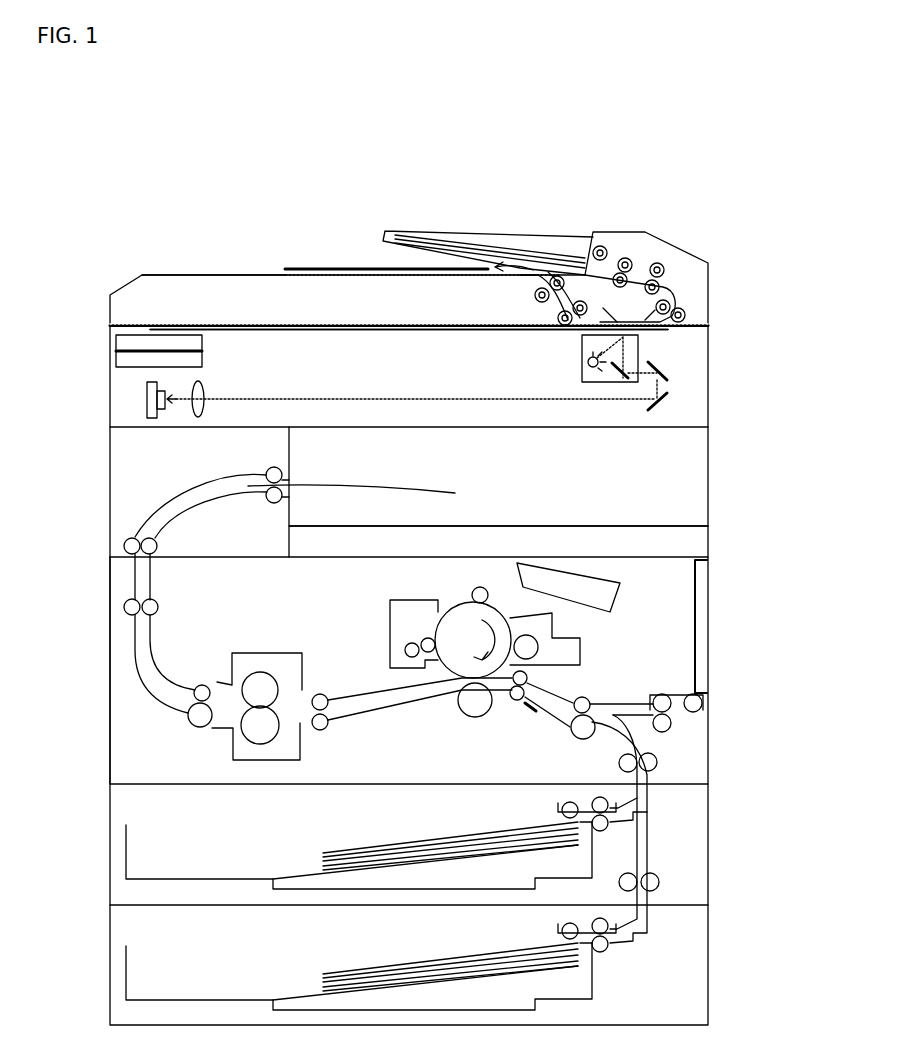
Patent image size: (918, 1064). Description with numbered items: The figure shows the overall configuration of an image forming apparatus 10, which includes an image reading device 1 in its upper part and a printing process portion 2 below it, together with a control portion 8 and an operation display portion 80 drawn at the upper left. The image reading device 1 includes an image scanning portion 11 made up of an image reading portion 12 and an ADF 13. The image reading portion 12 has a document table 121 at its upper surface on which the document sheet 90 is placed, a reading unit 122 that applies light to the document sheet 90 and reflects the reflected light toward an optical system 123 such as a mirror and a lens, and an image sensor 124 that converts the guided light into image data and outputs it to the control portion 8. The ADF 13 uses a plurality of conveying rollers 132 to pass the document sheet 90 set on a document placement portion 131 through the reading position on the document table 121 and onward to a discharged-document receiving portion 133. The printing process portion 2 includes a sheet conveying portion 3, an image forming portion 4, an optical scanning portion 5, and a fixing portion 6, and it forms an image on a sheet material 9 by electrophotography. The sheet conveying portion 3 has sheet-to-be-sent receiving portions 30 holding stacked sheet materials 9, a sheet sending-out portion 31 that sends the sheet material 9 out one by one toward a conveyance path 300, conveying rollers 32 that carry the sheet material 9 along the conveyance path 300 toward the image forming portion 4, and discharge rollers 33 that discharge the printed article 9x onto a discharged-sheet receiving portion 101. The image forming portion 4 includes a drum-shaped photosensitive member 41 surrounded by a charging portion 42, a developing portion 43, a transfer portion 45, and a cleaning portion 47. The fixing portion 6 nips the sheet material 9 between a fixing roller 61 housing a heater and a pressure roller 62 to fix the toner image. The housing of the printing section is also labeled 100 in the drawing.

The image forming apparatus 10 is at (107, 230).
The image reading device 1 is at (703, 442).
The printing process portion 2 is at (703, 491).
The sheet conveying portion 3 is at (404, 895).
The image scanning portion 11 is at (790, 313).
The image reading portion 12 is at (720, 374).
The ADF 13 is at (720, 311).
The document placement portion 131 is at (523, 235).
The conveying rollers 132 is at (622, 262).
The discharged-document receiving portion 133 is at (267, 273).
The document sheet 90 is at (338, 267).
The document table 121 is at (445, 332).
The reading unit 122 is at (580, 372).
The optical system 123 is at (652, 407).
The image sensor 124 is at (152, 420).
The control portion 8 is at (115, 360).
The operation display portion 80 is at (115, 340).
The discharge rollers 33 is at (267, 468).
The printed article 9x is at (363, 485).
The discharged-sheet receiving portion 101 is at (513, 526).
The printer housing 100 is at (110, 607).
The image forming portion 4 is at (453, 665).
The photosensitive member 41 is at (448, 607).
The charging portion 42 is at (488, 595).
The developing portion 43 is at (555, 623).
The cleaning portion 47 is at (410, 600).
The transfer portion 45 is at (468, 717).
The optical scanning portion 5 is at (623, 600).
The fixing portion 6 is at (243, 709).
The fixing roller 61 is at (252, 673).
The pressure roller 62 is at (280, 740).
The conveyance path 300 is at (560, 715).
The sheet sending-out portion 31 is at (528, 673).
The conveying rollers 32 is at (655, 772).
The sheet-to-be-sent receiving portion 30 is at (125, 838).
The sheet material 9 is at (392, 845).